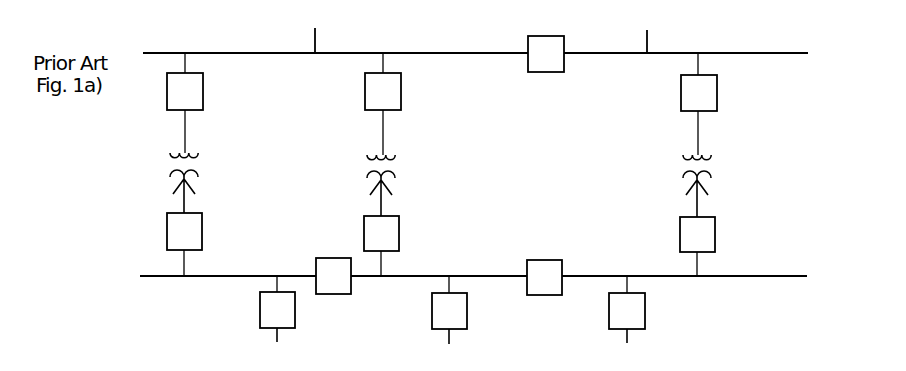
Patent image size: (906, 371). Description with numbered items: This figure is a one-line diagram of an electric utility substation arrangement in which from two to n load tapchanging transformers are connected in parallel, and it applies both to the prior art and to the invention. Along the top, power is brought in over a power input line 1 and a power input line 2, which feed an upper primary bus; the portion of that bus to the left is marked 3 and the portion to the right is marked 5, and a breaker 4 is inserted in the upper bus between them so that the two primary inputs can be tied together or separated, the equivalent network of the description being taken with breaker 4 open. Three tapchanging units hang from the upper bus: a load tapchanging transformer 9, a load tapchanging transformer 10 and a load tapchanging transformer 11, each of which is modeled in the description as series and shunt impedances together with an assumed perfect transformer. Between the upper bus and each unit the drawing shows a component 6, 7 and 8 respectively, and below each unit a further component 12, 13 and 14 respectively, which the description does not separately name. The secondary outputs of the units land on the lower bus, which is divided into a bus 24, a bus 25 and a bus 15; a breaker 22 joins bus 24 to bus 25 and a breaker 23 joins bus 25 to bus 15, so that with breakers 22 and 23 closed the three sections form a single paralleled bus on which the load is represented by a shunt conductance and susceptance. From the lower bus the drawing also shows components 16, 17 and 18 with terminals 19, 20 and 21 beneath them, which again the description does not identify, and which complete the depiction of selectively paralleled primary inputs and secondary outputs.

The power input line 1 is at (320, 33).
The power input line 2 is at (651, 45).
The first bus line 3 is at (366, 50).
The breaker 4 is at (566, 34).
The second bus line 5 is at (726, 50).
The bus coupling unit 6 is at (205, 100).
The bus coupling unit 7 is at (403, 100).
The bus coupling unit 8 is at (720, 101).
The load tapchanging transformer 9 is at (200, 160).
The load tapchanging transformer 10 is at (399, 164).
The load tapchanging transformer 11 is at (712, 176).
The bus coupling unit 12 is at (204, 238).
The bus coupling unit 13 is at (401, 239).
The bus coupling unit 14 is at (717, 239).
The bus 15 is at (737, 272).
The bus subscriber 16 is at (261, 322).
The bus subscriber 17 is at (470, 313).
The bus subscriber 18 is at (647, 320).
The subscriber terminal 19 is at (279, 340).
The subscriber terminal 20 is at (452, 340).
The subscriber terminal 21 is at (630, 342).
The breaker 22 is at (317, 259).
The breaker 23 is at (551, 259).
The bus 24 is at (190, 280).
The bus 25 is at (401, 282).